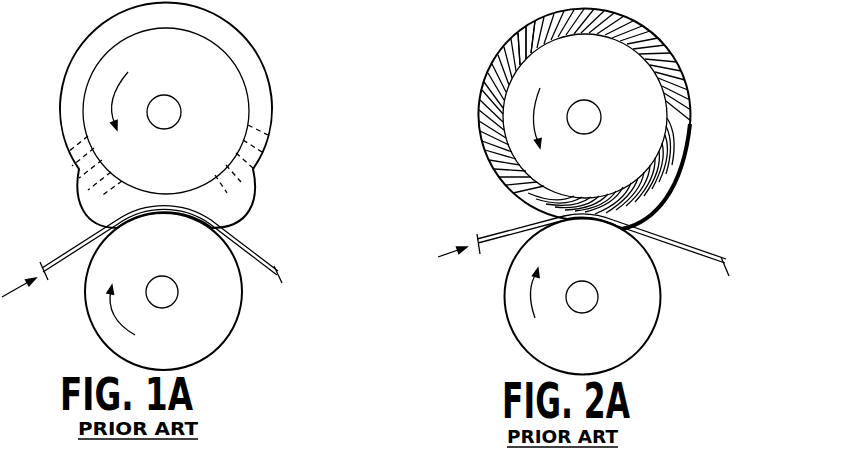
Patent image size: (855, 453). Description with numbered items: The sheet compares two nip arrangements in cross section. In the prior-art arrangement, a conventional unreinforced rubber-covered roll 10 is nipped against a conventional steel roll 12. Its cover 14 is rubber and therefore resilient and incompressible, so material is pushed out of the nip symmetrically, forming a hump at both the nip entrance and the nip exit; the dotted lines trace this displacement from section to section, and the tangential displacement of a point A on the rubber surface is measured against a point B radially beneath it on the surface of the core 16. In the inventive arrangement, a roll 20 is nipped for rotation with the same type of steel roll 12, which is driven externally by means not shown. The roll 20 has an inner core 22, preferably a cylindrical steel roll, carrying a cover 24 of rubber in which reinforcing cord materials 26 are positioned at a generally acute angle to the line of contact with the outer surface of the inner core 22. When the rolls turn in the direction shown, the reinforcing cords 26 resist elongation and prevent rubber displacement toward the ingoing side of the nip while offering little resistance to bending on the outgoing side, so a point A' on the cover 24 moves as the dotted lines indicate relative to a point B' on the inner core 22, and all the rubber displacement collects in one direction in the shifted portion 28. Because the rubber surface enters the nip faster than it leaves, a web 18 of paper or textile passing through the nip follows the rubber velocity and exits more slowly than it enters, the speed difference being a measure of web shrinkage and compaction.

In FIG. 1A, the unreinforced rubber-covered roll 10 is at (186, 115).
In FIG. 1A, the steel roll 12 is at (238, 306).
In FIG. 2A, the steel roll 12 is at (667, 326).
In FIG. 1A, the cover 14 is at (157, 115).
In FIG. 1A, the core 16 is at (225, 117).
In FIG. 1A, the web 18 is at (258, 251).
In FIG. 2A, the web 18 is at (693, 252).
In FIG. 2A, the roll 20 is at (565, 117).
In FIG. 2A, the inner core 22 is at (593, 126).
In FIG. 2A, the cover 24 is at (578, 117).
In FIG. 2A, the reinforcing cord materials 26 is at (518, 37).
In FIG. 2A, the shifted portion 28 is at (640, 207).